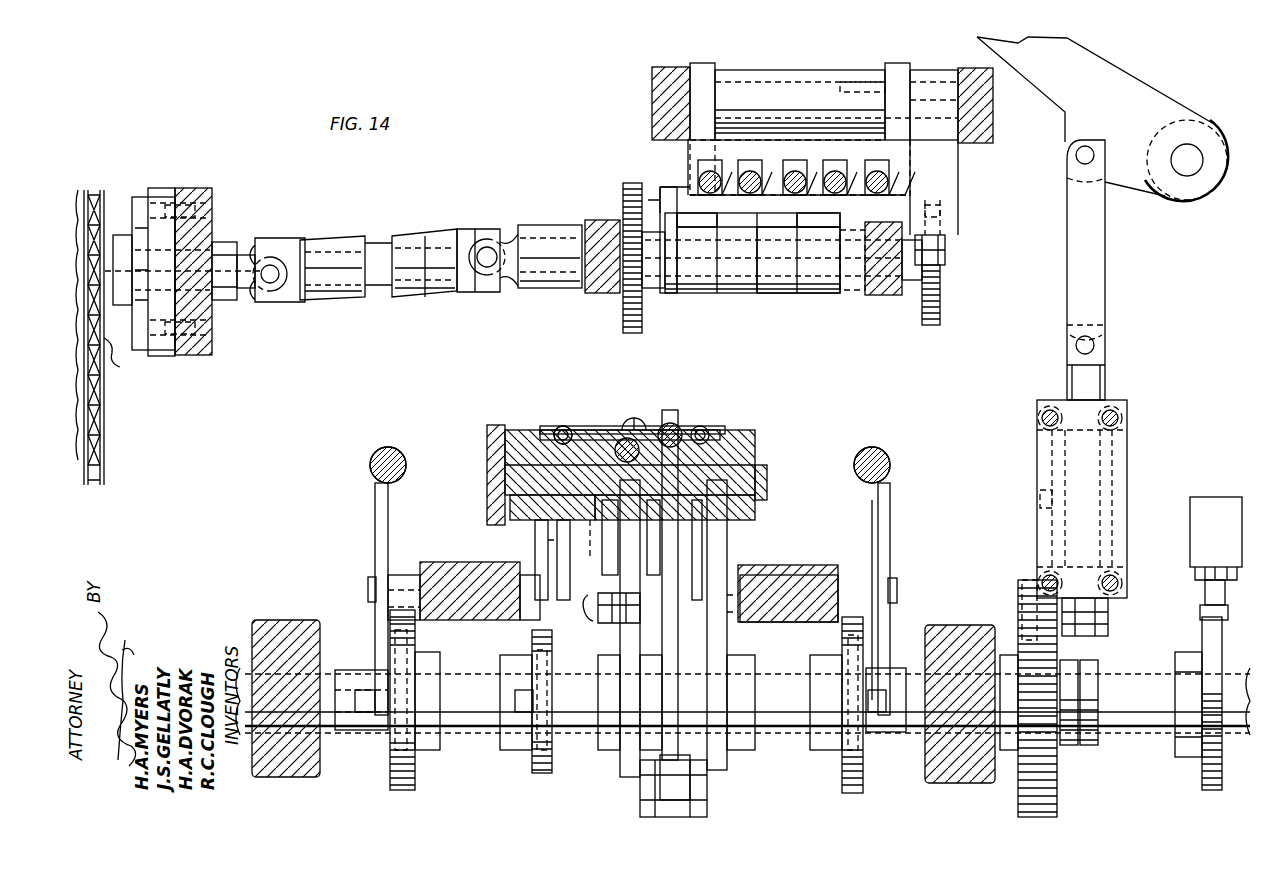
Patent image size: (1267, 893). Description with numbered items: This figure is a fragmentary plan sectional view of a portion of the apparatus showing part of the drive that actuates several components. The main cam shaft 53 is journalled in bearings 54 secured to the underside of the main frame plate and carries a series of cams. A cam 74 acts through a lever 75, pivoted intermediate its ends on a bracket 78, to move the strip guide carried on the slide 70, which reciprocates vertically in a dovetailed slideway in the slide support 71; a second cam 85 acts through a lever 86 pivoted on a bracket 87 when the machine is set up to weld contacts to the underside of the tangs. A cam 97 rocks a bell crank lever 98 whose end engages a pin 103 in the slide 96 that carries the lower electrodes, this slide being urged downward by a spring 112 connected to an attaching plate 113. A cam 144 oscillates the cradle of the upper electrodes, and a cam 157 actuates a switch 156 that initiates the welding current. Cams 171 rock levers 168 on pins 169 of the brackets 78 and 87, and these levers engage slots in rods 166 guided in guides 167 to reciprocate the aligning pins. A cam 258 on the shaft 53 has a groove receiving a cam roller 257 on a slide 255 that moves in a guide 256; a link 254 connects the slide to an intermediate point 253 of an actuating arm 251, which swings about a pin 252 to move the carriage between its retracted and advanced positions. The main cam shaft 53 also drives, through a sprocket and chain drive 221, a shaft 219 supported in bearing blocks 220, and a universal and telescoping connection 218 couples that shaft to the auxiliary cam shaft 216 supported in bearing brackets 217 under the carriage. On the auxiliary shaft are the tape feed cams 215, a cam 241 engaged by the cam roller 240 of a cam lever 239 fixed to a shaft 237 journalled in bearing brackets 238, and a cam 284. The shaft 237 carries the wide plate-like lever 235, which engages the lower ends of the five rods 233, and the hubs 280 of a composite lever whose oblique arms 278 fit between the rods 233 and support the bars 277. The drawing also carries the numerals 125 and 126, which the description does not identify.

The shaft 219 is at (78, 196).
The bearing blocks 220 is at (212, 218).
The sprocket and chain drive 221 is at (127, 360).
The universal and telescoping connection 218 is at (398, 226).
The bearing brackets 217 is at (600, 293).
The cam 284 is at (642, 323).
The tape feed cam 215 is at (668, 290).
The auxiliary cam shaft 216 is at (815, 298).
The bar 277 is at (755, 195).
The arm 278 is at (820, 198).
The cam roller 240 is at (945, 247).
The cam 241 is at (940, 305).
The cam lever 239 is at (961, 197).
The bearing brackets 238 is at (652, 98).
The hubs 280 is at (702, 68).
The shaft 237 is at (791, 70).
The lever 235 is at (855, 58).
The rod 233 is at (740, 173).
The actuating arm 251 is at (1125, 76).
The pin 252 is at (1187, 176).
The intermediate point 253 is at (1070, 153).
The link 254 is at (1102, 255).
The slide 255 is at (1100, 378).
The guide 256 is at (1128, 452).
The cam roller 257 is at (1020, 581).
The cam 258 is at (1018, 604).
The switch 156 is at (1203, 497).
The cam 157 is at (1202, 633).
The main cam shaft 53 is at (360, 714).
The bearings 54 is at (296, 622).
The cams 171 is at (415, 779).
The pins 169 is at (368, 585).
The levers 168 is at (376, 520).
The rods 166 is at (404, 460).
The guides 167 is at (383, 447).
The bracket 87 is at (457, 564).
The slide support 71 is at (488, 492).
The slide 70 is at (533, 521).
The lever 86 is at (560, 555).
The lever 75 is at (700, 558).
The bracket 78 is at (800, 565).
The cam 144 is at (710, 624).
The slide 96 is at (688, 410).
The spring 112 is at (633, 416).
The pin 103 is at (645, 431).
The attaching plate 113 is at (606, 421).
The screw 125 is at (561, 427).
The washer 126 is at (552, 433).
The cam 85 is at (547, 772).
The bell crank lever 98 is at (610, 618).
The cam 97 is at (620, 770).
The cam 74 is at (708, 777).